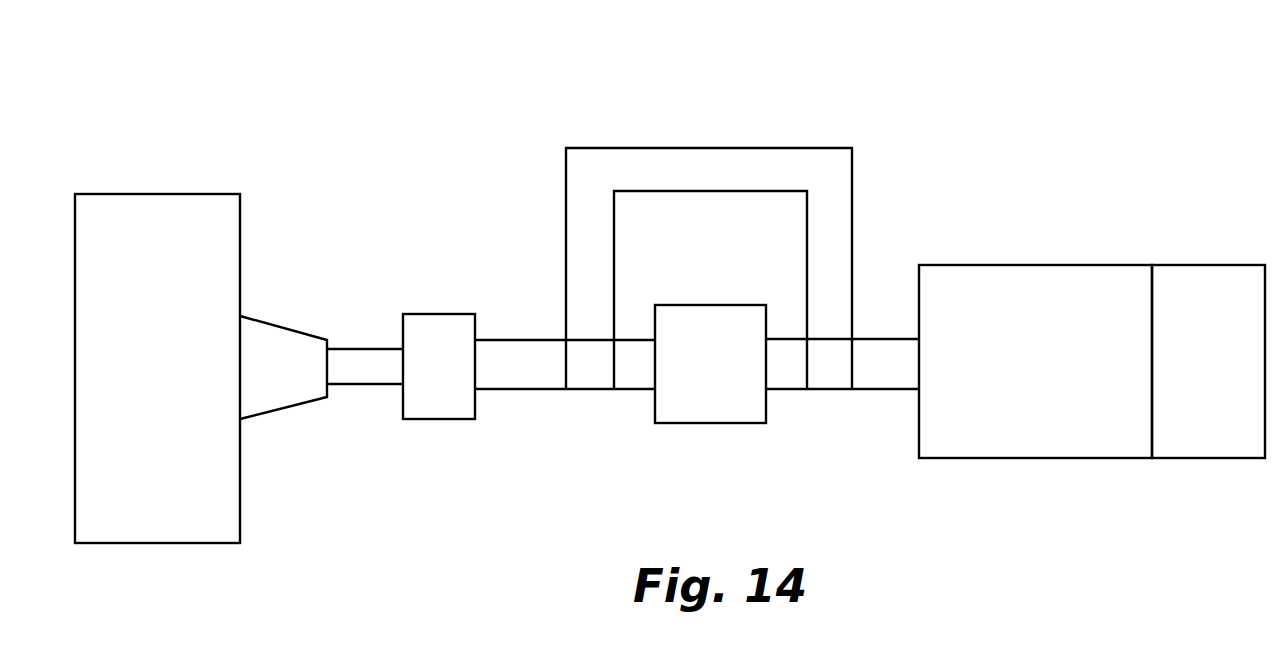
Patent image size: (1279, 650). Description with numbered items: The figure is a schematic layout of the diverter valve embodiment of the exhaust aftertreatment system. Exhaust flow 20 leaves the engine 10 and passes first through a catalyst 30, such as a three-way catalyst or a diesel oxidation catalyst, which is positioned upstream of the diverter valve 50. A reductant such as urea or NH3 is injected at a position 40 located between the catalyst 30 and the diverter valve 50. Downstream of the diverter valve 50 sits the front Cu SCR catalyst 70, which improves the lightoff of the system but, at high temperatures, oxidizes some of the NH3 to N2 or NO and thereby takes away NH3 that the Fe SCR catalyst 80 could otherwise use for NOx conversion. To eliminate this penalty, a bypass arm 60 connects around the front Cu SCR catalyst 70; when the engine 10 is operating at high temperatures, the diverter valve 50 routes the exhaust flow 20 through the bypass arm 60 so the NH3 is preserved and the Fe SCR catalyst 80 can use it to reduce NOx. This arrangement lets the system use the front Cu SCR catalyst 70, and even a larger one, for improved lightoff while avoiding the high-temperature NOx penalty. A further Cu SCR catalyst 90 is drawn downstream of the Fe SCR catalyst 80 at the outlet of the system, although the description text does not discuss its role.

The engine 10 is at (138, 545).
The exhaust flow 20 is at (368, 349).
The catalyst 30 is at (440, 419).
The reductant injection position 40 is at (523, 340).
The diverter valve 50 is at (595, 390).
The bypass arm 60 is at (798, 148).
The front Cu SCR catalyst 70 is at (710, 423).
The Fe SCR catalyst 80 is at (1058, 265).
The Cu SCR catalyst 90 is at (1212, 265).